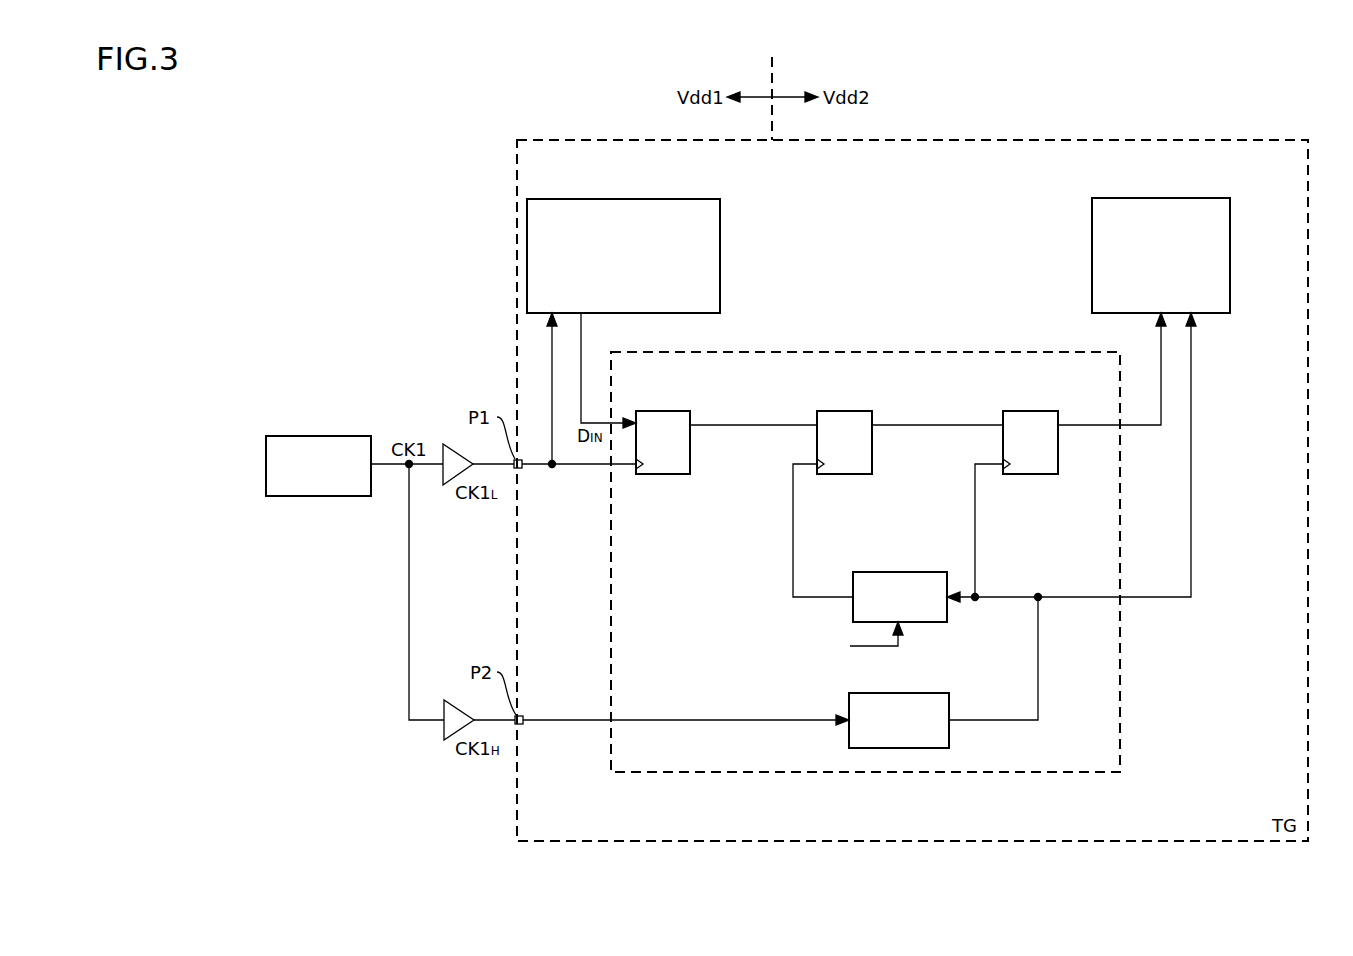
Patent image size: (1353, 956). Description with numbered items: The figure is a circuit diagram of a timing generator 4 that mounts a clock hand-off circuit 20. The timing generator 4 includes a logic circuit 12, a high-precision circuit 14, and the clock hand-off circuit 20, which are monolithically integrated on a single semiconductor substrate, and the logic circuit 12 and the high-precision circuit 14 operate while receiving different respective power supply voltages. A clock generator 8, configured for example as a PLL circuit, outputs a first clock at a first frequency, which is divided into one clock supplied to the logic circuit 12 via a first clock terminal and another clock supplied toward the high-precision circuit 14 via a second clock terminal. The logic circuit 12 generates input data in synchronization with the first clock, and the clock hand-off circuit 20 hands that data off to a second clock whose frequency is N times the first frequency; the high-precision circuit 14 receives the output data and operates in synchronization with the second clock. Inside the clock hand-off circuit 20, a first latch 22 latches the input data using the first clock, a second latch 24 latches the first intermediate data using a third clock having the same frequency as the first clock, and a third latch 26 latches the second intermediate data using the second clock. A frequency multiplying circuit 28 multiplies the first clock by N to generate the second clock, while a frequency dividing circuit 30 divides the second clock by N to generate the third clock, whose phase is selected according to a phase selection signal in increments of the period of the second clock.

The timing generator 4 is at (914, 141).
The clock generator 8 is at (318, 436).
The logic circuit 12 is at (623, 199).
The high-precision circuit 14 is at (1161, 198).
The clock hand-off circuit 20 is at (1121, 733).
The first latch 22 is at (665, 411).
The second latch 24 is at (845, 411).
The third latch 26 is at (1030, 411).
The frequency multiplying circuit 28 is at (898, 693).
The frequency dividing circuit 30 is at (898, 572).